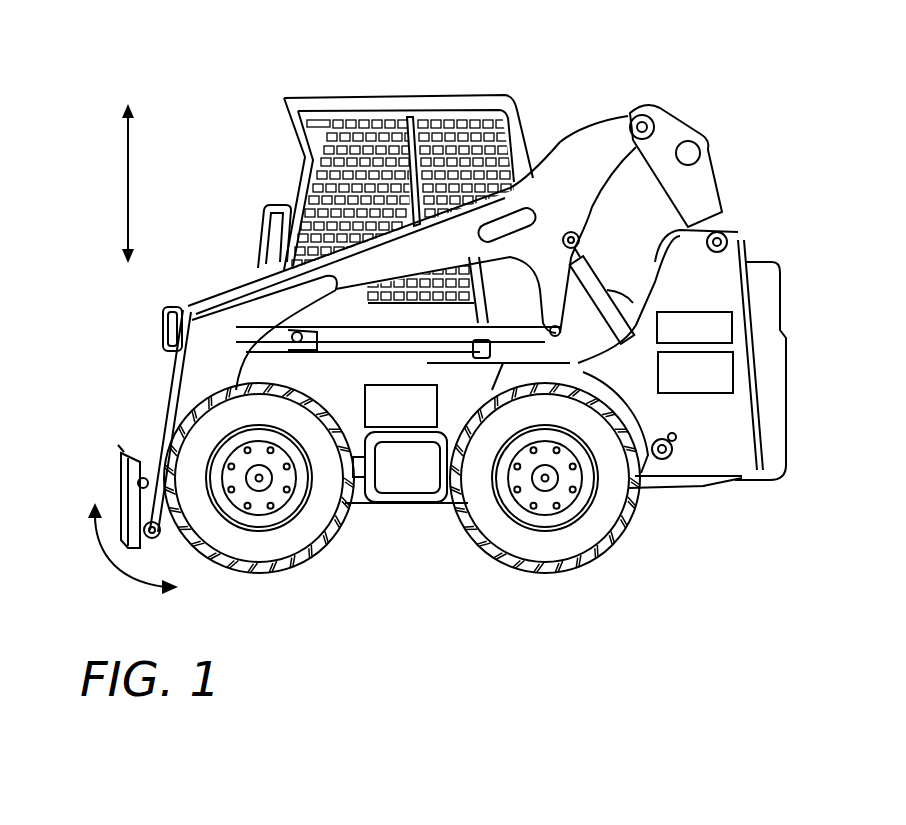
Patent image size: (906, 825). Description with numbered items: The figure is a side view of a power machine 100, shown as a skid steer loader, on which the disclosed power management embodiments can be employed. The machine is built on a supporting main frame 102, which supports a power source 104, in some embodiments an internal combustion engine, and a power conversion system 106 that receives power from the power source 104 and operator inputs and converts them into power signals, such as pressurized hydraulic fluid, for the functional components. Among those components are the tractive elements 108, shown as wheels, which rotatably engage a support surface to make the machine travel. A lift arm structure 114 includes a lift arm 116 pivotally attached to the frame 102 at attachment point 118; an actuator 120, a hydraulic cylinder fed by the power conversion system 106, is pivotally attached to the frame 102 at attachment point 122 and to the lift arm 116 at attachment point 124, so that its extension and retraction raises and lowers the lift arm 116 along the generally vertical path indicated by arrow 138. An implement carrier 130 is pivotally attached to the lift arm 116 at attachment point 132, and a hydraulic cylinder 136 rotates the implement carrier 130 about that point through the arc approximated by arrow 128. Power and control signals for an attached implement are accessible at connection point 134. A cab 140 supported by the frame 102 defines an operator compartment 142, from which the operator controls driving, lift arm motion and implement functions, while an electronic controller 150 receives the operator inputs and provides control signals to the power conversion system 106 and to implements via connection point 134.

The power machine 100 is at (160, 130).
The main frame 102 is at (360, 513).
The power source 104 is at (678, 338).
The power conversion system 106 is at (678, 384).
The tractive elements 108 is at (300, 574).
The lift arm structure 114 is at (608, 100).
The lift arm 116 is at (262, 305).
The attachment point 118 is at (722, 232).
The actuator 120 is at (593, 207).
The attachment point 122 is at (668, 458).
The attachment point 124 is at (576, 243).
The arrow 128 is at (124, 590).
The implement carrier 130 is at (118, 488).
The attachment point 132 is at (160, 538).
The connection point 134 is at (180, 303).
The hydraulic cylinder 136 is at (158, 442).
The arrow 138 is at (125, 205).
The cab 140 is at (400, 96).
The operator compartment 142 is at (255, 188).
The electronic controller 150 is at (384, 416).